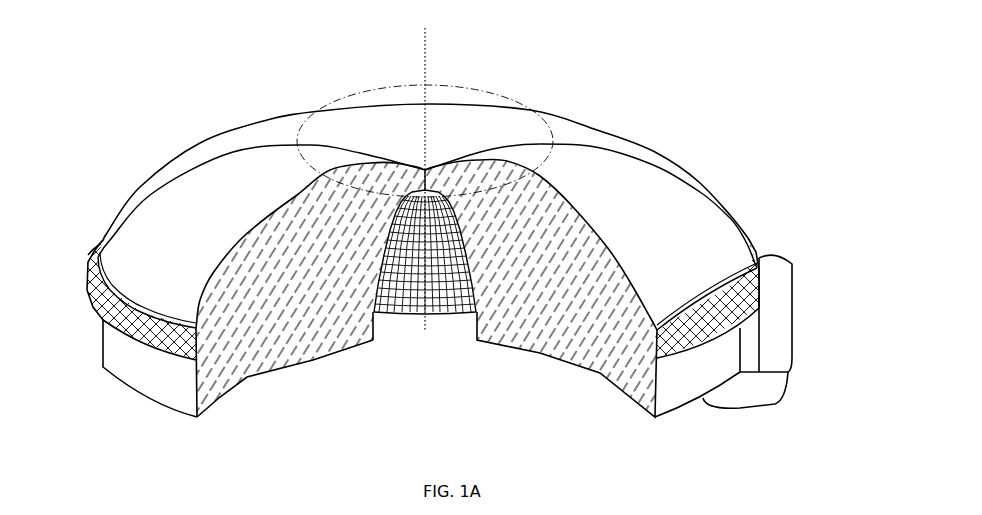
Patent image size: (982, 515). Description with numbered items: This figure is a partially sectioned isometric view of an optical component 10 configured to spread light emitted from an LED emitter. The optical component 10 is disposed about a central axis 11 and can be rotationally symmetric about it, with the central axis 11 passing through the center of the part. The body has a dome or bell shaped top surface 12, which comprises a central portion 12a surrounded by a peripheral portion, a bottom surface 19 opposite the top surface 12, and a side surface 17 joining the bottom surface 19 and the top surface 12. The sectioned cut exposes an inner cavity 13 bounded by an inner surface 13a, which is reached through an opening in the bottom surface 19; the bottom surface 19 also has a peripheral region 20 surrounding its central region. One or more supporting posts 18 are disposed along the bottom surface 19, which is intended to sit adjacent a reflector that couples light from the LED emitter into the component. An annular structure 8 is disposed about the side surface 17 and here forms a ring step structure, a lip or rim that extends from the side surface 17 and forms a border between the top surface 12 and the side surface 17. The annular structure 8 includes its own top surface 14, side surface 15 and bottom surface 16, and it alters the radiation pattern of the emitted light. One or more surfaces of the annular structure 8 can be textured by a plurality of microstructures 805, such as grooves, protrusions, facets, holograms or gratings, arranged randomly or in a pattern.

The annular structure 8 is at (80, 277).
The optical component 10 is at (120, 160).
The central axis 11 is at (428, 47).
The top surface 12 is at (630, 208).
The central portion 12a is at (380, 85).
The inner cavity 13 is at (438, 326).
The inner surface 13a is at (411, 318).
The top surface 14 is at (757, 253).
The side surface 15 is at (735, 328).
The bottom surface 16 is at (640, 370).
The side surface 17 is at (673, 380).
The supporting post 18 is at (757, 387).
The bottom surface 19 is at (315, 360).
The peripheral region 20 is at (218, 407).
The microstructures 805 is at (147, 327).